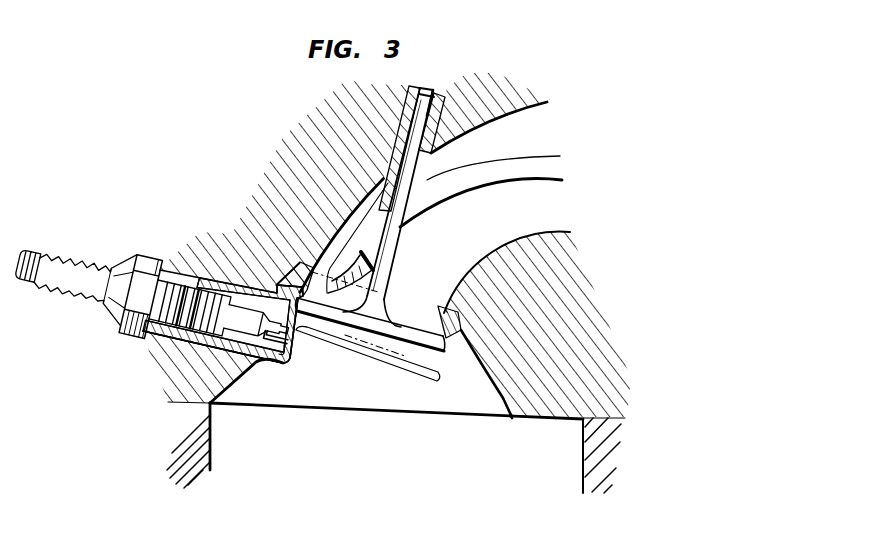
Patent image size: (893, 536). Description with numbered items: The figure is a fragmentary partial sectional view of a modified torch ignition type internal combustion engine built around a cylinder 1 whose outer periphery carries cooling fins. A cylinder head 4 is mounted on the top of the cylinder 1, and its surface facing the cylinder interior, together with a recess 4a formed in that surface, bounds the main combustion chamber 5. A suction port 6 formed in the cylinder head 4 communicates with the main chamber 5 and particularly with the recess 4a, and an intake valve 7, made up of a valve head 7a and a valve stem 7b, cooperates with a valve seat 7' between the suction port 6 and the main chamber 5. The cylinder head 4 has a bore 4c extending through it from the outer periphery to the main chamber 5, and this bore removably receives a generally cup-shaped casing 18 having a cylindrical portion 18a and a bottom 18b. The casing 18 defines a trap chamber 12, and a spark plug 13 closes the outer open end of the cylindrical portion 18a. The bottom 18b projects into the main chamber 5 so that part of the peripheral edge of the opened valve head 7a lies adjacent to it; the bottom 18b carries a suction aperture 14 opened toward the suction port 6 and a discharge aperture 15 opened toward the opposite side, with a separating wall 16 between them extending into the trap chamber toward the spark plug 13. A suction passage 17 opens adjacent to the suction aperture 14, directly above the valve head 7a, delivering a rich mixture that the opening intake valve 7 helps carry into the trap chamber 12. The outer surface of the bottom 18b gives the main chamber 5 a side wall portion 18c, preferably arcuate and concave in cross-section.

The cylinder 1 is at (180, 423).
The cylinder head 4 is at (350, 140).
The recess 4a is at (411, 393).
The bore 4c is at (278, 274).
The main combustion chamber 5 is at (237, 444).
The suction port 6 is at (527, 215).
The intake valve 7 is at (388, 207).
The valve head 7a is at (403, 333).
The valve stem 7b is at (425, 103).
The valve seat 7' is at (471, 312).
The trap chamber 12 is at (243, 313).
The spark plug 13 is at (203, 288).
The suction aperture 14 is at (290, 291).
The discharge aperture 15 is at (283, 337).
The separating wall 16 is at (262, 347).
The suction passage 17 is at (491, 172).
The casing 18 is at (197, 341).
The cylindrical portion 18a is at (211, 343).
The bottom 18b is at (294, 334).
The side wall portion 18c is at (294, 326).